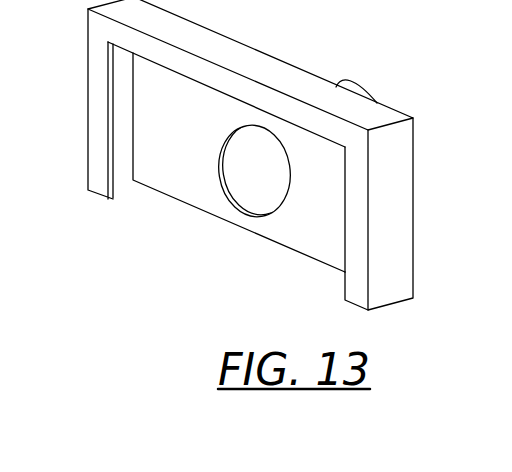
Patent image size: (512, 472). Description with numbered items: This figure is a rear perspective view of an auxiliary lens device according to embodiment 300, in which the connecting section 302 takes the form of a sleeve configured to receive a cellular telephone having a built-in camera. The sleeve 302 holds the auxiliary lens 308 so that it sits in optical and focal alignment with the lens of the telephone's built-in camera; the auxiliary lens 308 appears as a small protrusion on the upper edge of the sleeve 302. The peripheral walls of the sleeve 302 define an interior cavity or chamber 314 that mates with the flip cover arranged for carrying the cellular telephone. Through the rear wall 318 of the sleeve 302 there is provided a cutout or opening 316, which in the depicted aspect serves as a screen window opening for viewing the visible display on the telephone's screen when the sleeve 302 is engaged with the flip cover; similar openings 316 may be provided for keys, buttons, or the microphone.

The embodiment 300 is at (263, 161).
The connecting section 302 is at (398, 209).
The auxiliary lens 308 is at (345, 83).
The interior cavity or chamber 314 is at (176, 178).
The cutouts or openings 316 is at (345, 276).
The rear wall 318 is at (95, 126).